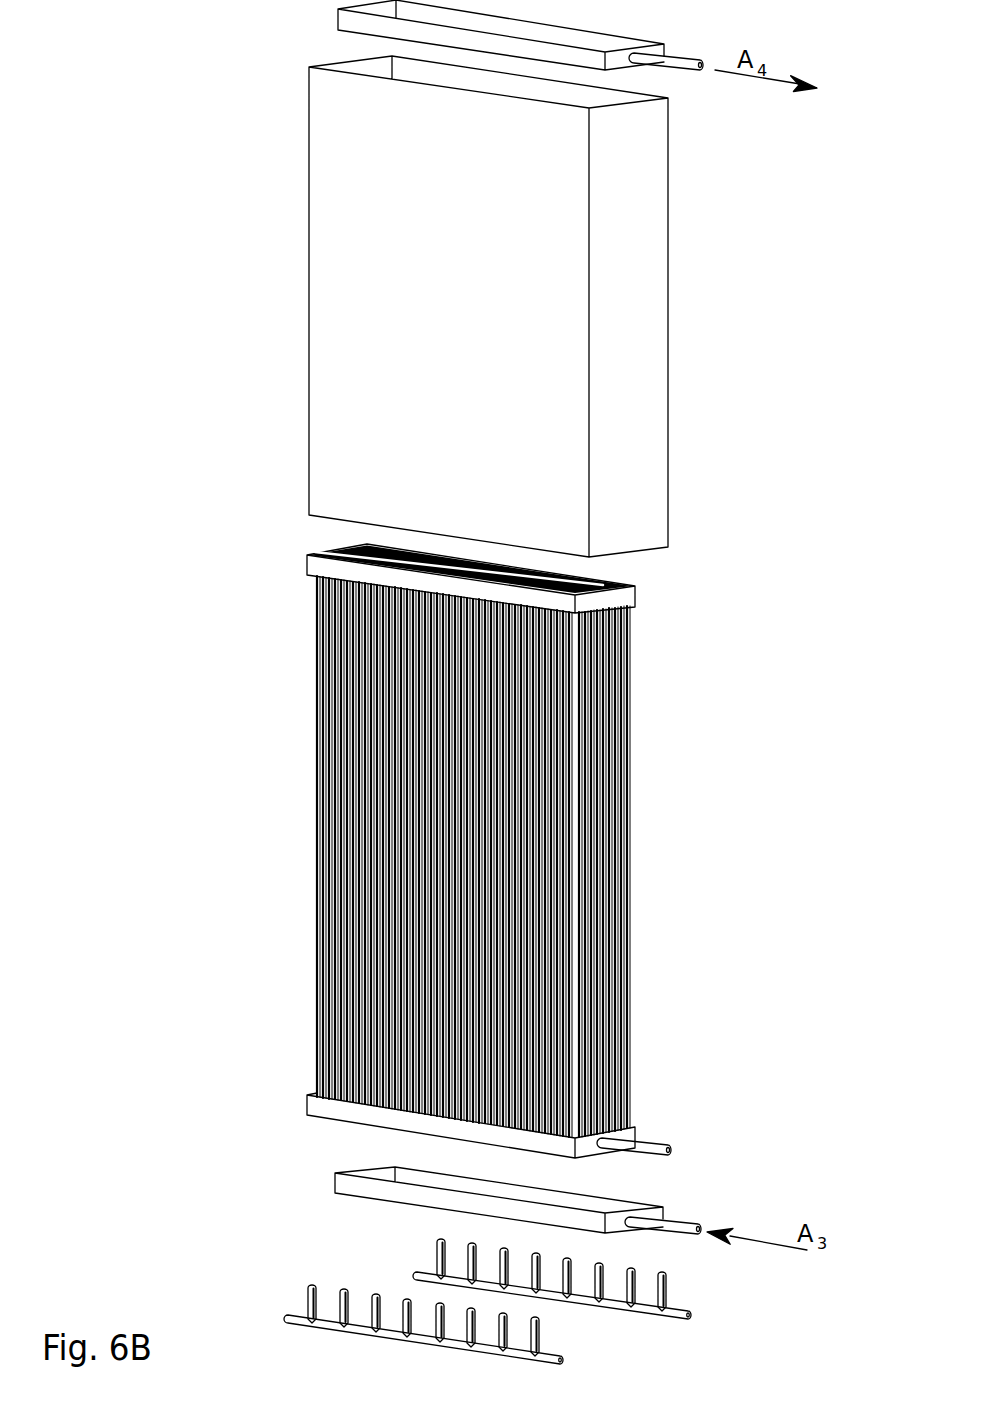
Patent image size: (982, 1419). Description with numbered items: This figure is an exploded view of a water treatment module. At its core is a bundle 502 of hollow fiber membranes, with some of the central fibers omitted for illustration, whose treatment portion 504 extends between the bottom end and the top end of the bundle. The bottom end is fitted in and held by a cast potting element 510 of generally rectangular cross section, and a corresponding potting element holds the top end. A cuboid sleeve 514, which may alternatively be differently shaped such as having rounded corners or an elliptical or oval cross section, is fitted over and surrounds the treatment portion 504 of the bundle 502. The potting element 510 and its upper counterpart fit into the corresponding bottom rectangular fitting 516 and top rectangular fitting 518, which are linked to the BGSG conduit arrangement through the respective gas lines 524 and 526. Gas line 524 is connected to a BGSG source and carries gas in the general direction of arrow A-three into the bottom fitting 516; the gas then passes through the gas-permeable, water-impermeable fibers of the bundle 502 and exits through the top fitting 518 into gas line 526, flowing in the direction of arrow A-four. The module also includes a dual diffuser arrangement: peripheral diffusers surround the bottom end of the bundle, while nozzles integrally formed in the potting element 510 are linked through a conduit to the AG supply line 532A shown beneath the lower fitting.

The bundle 502 is at (412, 840).
The treatment portion 504 is at (317, 710).
The potting element 510 is at (307, 1102).
The cuboid sleeve 514 is at (352, 353).
The bottom rectangular fitting 516 is at (348, 1185).
The top rectangular fitting 518 is at (338, 17).
The gas line 524 is at (679, 1219).
The gas line 526 is at (678, 61).
The AG supply line 532A is at (648, 1138).